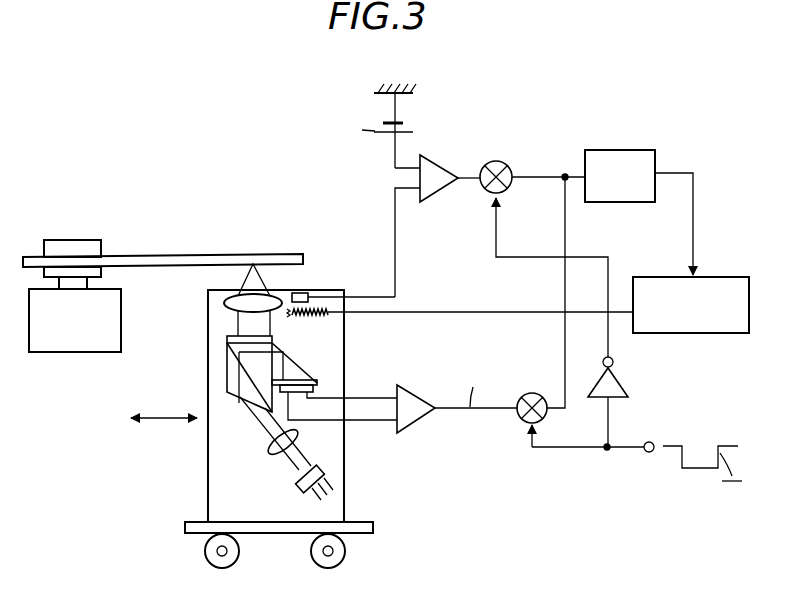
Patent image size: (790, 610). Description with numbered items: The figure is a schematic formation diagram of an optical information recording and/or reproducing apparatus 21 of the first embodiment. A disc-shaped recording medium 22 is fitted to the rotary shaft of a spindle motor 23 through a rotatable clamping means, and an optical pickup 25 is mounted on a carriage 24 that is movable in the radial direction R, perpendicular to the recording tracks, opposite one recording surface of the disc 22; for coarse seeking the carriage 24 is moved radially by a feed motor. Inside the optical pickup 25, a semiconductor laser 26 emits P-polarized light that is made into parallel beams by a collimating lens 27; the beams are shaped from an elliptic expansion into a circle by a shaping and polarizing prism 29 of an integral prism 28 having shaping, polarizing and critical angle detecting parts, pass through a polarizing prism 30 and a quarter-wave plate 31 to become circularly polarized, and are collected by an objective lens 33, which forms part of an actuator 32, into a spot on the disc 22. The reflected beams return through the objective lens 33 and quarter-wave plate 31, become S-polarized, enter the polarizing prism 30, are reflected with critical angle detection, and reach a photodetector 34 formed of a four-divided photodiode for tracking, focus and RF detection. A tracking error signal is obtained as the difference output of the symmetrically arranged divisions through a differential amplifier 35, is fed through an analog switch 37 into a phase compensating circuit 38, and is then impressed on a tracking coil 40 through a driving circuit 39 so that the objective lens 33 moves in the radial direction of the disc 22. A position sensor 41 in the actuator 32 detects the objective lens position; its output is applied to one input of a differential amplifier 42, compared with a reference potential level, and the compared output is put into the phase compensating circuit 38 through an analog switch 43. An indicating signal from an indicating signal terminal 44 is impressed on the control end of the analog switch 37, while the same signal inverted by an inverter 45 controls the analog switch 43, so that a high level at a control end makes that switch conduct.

The optical information recording and/or reproducing apparatus 21 is at (121, 485).
The disc-shaped recording medium 22 is at (113, 256).
The spindle motor 23 is at (70, 352).
The carriage 24 is at (372, 527).
The optical pickup 25 is at (206, 472).
The semiconductor laser 26 is at (297, 492).
The collimating lens 27 is at (273, 448).
The integral prism 28 is at (224, 365).
The shaping and polarizing prism 29 is at (252, 392).
The polarizing prism 30 is at (297, 369).
The λ/4-plate 31 is at (227, 340).
The actuator 32 is at (297, 321).
The objective lens 33 is at (235, 296).
The photodetector 34 is at (293, 397).
The differential amplifier 35 is at (422, 420).
The analog switch 37 is at (517, 420).
The phase compensating circuit 38 is at (630, 150).
The driving circuit 39 is at (720, 335).
The tracking coil 40 is at (333, 311).
The position sensor 41 is at (298, 293).
The differential amplifier 42 is at (442, 182).
The analog switch 43 is at (490, 160).
The indicating signal terminal 44 is at (647, 452).
The inverter 45 is at (622, 378).